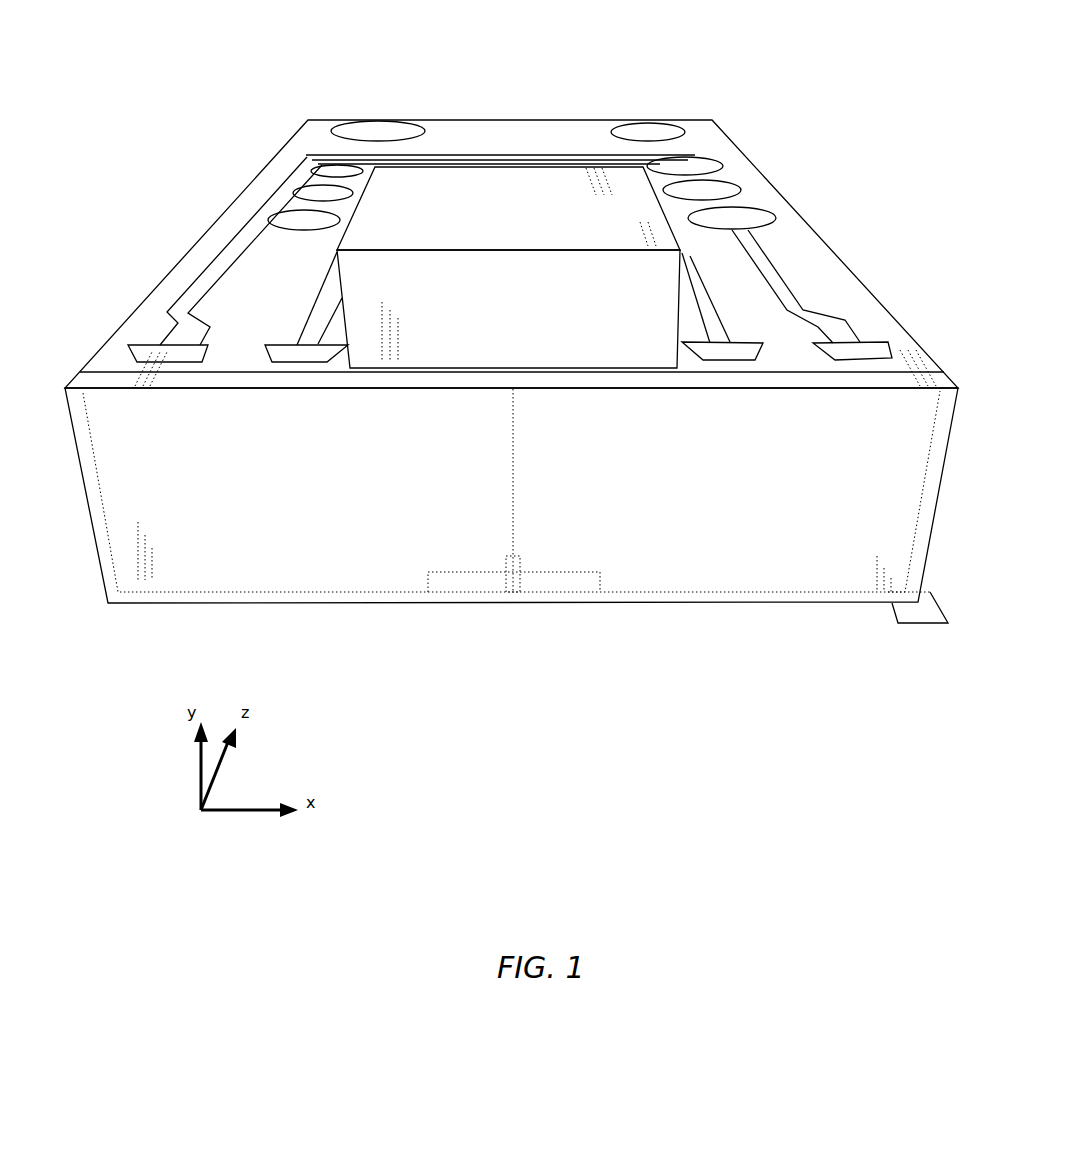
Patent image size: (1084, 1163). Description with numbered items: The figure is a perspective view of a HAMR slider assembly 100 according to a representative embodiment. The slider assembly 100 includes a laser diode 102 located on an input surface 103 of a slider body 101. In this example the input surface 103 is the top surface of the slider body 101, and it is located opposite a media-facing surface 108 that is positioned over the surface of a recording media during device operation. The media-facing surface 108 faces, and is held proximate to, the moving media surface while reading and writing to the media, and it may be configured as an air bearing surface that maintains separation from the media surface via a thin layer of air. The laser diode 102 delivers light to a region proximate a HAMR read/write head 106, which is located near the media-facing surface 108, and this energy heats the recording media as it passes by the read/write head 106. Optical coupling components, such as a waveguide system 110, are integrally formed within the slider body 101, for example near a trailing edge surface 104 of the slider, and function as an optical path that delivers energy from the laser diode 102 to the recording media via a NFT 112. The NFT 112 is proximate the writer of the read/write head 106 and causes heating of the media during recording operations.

The HAMR slider assembly 100 is at (731, 54).
The slider body 101 is at (278, 154).
The laser diode 102 is at (462, 177).
The input surface 103 is at (143, 323).
The trailing edge surface 104 is at (180, 581).
The HAMR read/write head 106 is at (512, 594).
The media-facing surface 108 is at (935, 625).
The waveguide system 110 is at (513, 470).
The NFT 112 is at (511, 595).